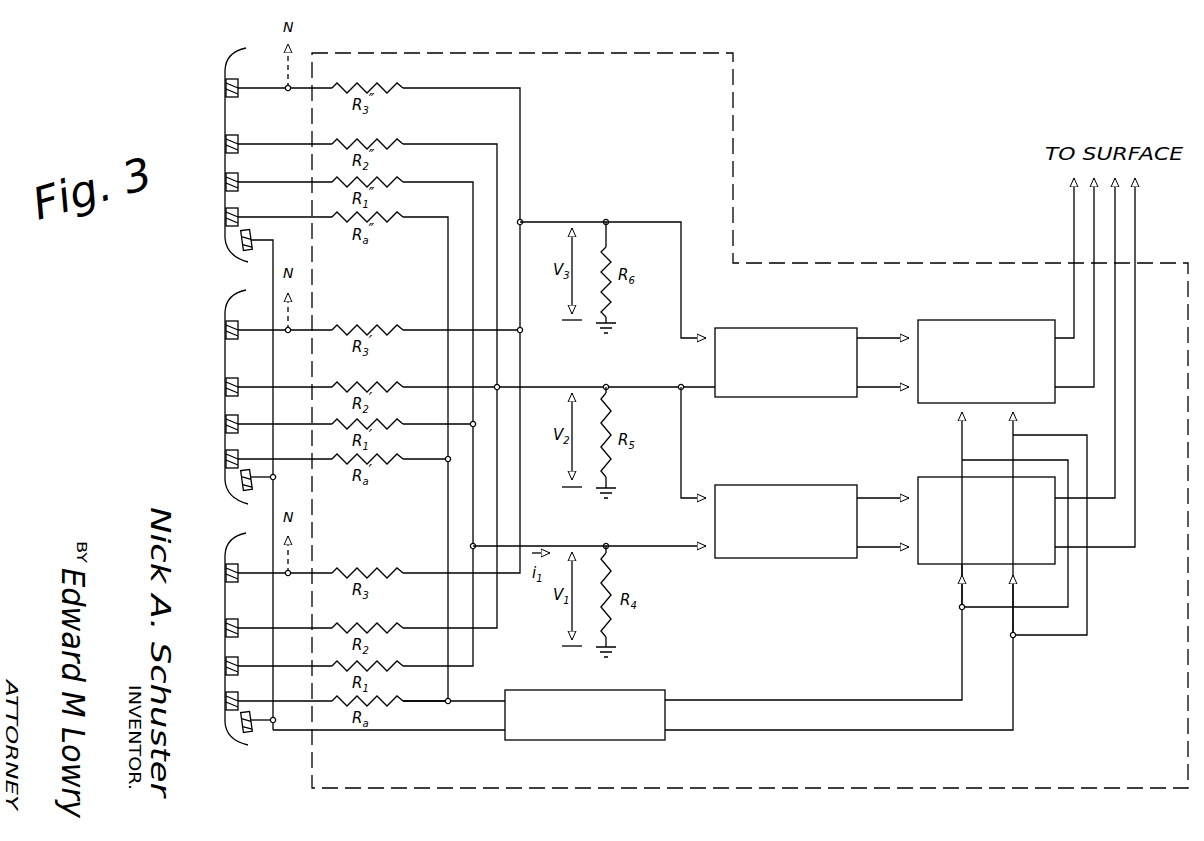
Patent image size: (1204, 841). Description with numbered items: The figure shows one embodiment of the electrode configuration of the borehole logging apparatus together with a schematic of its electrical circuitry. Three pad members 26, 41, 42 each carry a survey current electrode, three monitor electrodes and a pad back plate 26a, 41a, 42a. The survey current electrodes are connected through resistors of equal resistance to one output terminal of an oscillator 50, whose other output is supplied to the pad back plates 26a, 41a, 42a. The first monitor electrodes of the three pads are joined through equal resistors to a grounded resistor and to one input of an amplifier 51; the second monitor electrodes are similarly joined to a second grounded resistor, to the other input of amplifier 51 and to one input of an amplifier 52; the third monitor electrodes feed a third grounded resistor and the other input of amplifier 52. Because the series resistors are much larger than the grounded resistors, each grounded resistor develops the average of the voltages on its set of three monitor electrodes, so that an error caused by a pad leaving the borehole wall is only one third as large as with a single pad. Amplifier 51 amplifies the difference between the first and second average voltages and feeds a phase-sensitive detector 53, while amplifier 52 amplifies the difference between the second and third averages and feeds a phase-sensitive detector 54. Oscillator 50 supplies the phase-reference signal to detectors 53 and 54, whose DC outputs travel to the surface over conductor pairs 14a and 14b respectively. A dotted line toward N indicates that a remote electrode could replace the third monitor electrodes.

The pad member 42 is at (243, 50).
The pad back plate 42a is at (244, 256).
The pad member 41 is at (243, 292).
The pad back plate 41a is at (252, 498).
The pad member 26 is at (243, 535).
The pad back plate 26a is at (255, 745).
The oscillator 50 is at (578, 742).
The amplifier 51 is at (782, 485).
The amplifier 52 is at (782, 328).
The phase-sensitive detector 53 is at (938, 477).
The phase-sensitive detector 54 is at (988, 320).
The conductor pair 14a is at (1115, 218).
The conductor pair 14b is at (1074, 238).